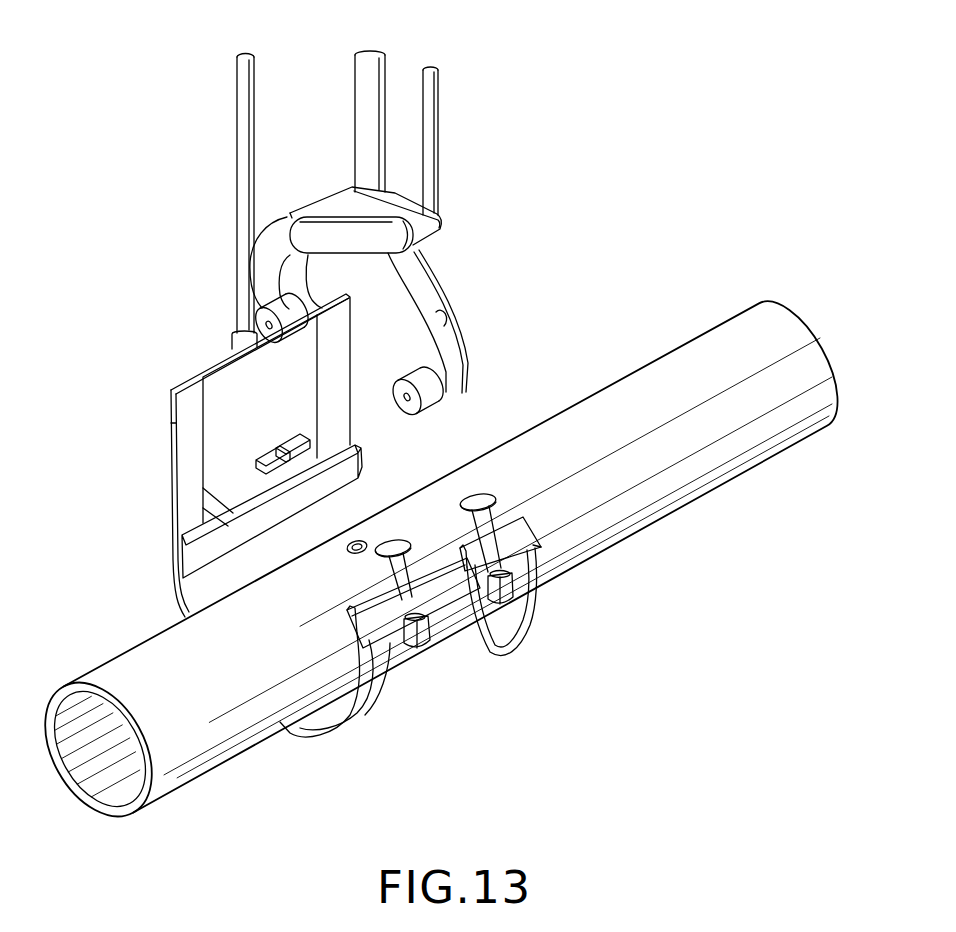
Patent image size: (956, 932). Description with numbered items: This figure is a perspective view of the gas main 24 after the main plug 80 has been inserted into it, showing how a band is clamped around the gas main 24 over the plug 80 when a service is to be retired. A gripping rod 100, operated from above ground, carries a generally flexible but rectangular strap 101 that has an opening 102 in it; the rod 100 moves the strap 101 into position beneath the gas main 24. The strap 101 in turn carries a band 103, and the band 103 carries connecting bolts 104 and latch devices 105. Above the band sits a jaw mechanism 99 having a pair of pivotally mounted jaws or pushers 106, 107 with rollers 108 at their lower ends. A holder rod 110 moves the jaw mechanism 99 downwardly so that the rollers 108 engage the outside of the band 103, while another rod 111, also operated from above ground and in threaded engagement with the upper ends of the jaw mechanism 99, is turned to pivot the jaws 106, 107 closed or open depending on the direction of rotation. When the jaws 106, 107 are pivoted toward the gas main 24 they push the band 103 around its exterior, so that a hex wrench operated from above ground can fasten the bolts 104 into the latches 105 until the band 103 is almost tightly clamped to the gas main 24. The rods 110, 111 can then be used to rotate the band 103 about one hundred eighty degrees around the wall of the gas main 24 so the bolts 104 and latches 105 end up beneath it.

The gas main 24 is at (695, 337).
The plug 80 is at (351, 549).
The jaw mechanism 99 is at (412, 189).
The gripping rod 100 is at (237, 132).
The strap 101 is at (221, 377).
The opening 102 is at (258, 445).
The band 103 is at (360, 525).
The connecting bolts 104 is at (413, 578).
The latch devices 105 is at (275, 448).
The jaw 106 is at (289, 217).
The jaw 107 is at (440, 287).
The rollers 108 is at (465, 373).
The holder rod 110 is at (386, 78).
The rod 111 is at (440, 101).